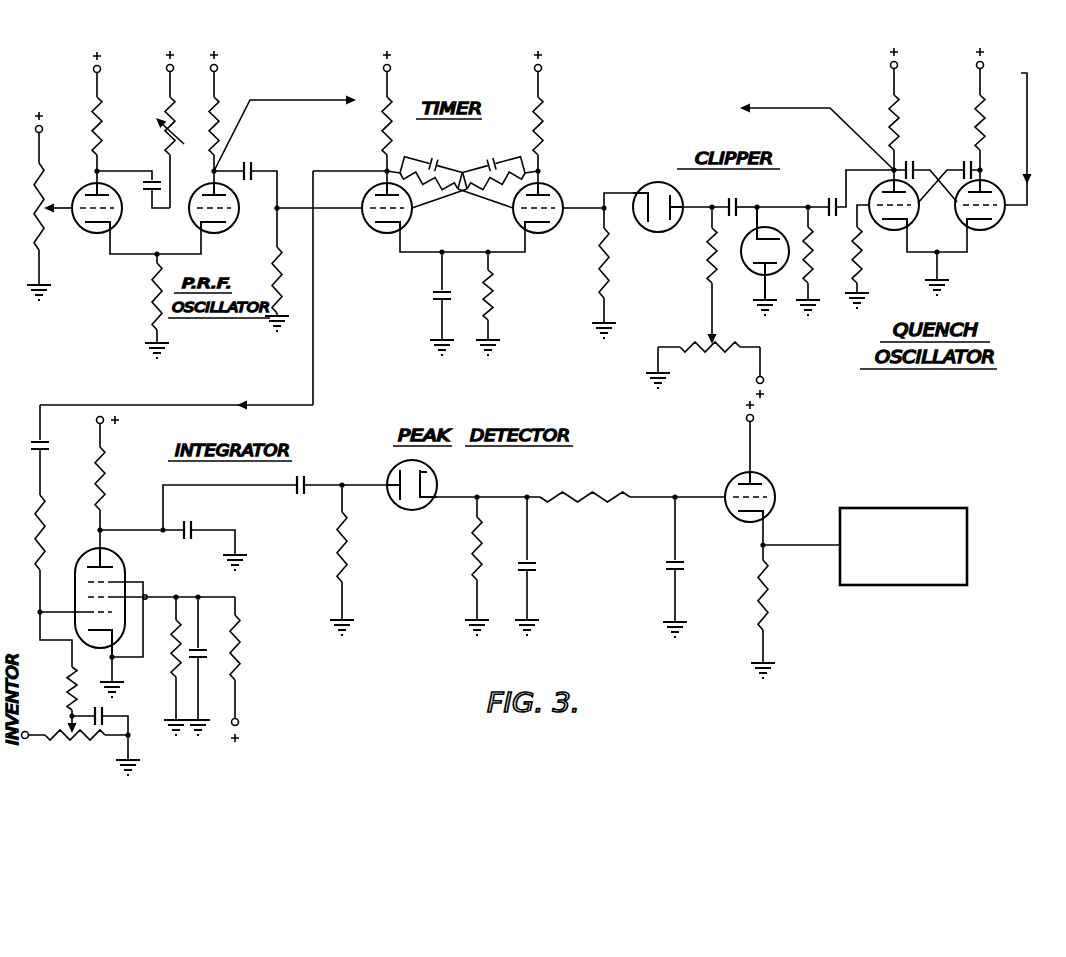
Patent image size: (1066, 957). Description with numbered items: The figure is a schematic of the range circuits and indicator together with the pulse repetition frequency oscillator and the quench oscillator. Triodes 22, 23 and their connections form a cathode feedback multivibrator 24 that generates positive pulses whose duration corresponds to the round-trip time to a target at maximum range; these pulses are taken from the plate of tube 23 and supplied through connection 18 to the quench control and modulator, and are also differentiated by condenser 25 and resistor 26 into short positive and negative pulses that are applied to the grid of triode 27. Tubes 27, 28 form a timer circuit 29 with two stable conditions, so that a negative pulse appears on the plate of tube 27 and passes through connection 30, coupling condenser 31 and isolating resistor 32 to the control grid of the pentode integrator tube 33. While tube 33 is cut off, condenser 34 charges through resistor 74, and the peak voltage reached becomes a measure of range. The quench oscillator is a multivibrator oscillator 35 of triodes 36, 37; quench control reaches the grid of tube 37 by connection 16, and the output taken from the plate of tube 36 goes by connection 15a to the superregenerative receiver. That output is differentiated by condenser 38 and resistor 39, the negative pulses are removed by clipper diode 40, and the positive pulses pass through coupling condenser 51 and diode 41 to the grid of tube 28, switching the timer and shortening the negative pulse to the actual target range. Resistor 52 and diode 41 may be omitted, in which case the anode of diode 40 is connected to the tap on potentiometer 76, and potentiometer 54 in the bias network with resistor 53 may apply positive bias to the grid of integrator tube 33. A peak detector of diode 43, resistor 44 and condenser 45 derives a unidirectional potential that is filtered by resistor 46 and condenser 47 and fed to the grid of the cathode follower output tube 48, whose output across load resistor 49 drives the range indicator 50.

The connection 15a is at (849, 120).
The connection 16 is at (1026, 73).
The connection 18 is at (244, 116).
The triode 22 is at (81, 193).
The triode 23 is at (207, 234).
The cathode feedback multivibrator 24 is at (165, 248).
The condenser 25 is at (276, 167).
The resistor 26 is at (289, 252).
The triode 27 is at (394, 230).
The tube 28 is at (552, 219).
The timer circuit 29 is at (470, 245).
The connection 30 is at (198, 404).
The coupling condenser 31 is at (37, 439).
The isolating resistor 32 is at (35, 516).
The pentode integrator tube 33 is at (97, 553).
The condenser 34 is at (197, 531).
The multivibrator oscillator 35 is at (955, 245).
The triode 36 is at (880, 193).
The triode 37 is at (998, 221).
The condenser 38 is at (829, 200).
The resistor 39 is at (812, 268).
The clipper diode 40 is at (765, 277).
The diode 41 is at (661, 233).
The diode 43 is at (434, 478).
The resistor 44 is at (472, 555).
The condenser 45 is at (530, 572).
The resistor 46 is at (592, 490).
The condenser 47 is at (680, 576).
The cathode follower output tube 48 is at (775, 483).
The load resistor 49 is at (775, 601).
The range indicator 50 is at (900, 508).
The coupling condenser 51 is at (735, 200).
The resistor 52 is at (708, 279).
The resistor 53 is at (70, 694).
The potentiometer 54 is at (107, 742).
The resistor 74 is at (96, 479).
The potentiometer 76 is at (723, 361).